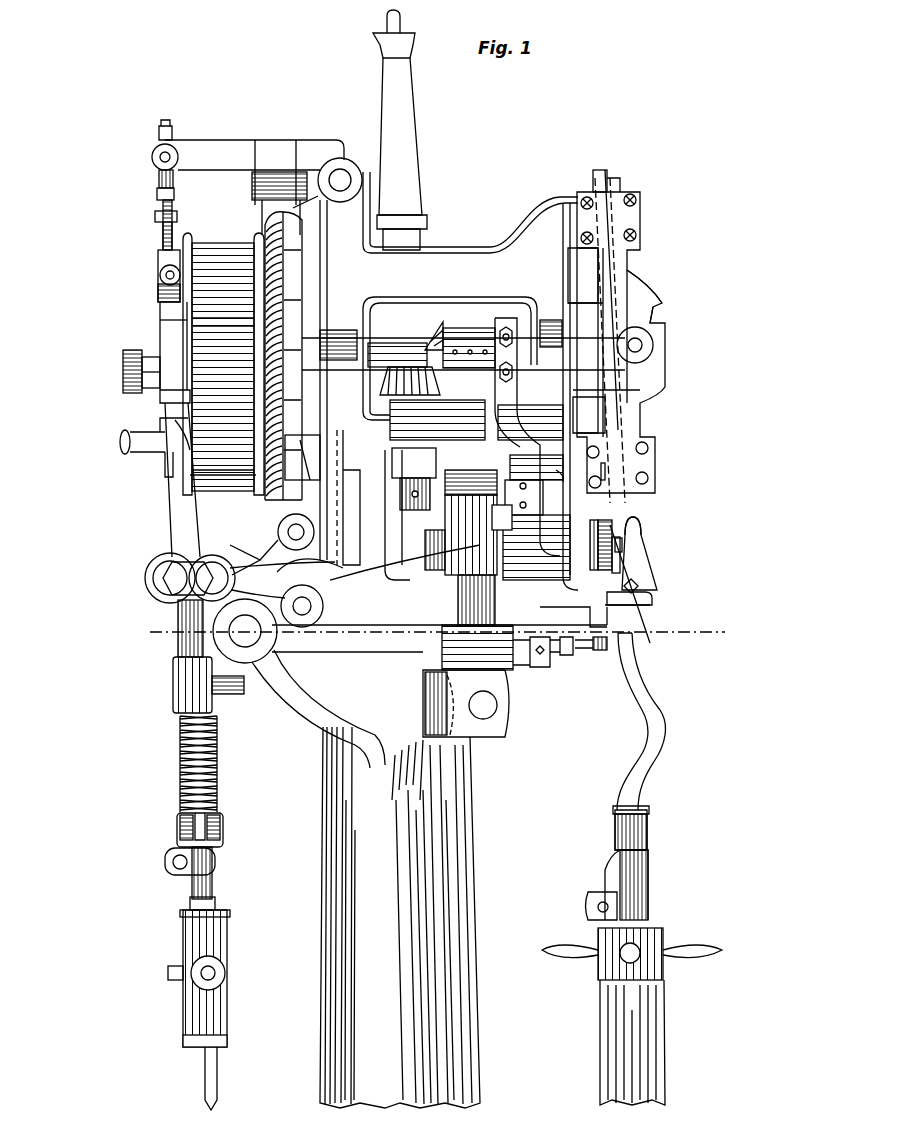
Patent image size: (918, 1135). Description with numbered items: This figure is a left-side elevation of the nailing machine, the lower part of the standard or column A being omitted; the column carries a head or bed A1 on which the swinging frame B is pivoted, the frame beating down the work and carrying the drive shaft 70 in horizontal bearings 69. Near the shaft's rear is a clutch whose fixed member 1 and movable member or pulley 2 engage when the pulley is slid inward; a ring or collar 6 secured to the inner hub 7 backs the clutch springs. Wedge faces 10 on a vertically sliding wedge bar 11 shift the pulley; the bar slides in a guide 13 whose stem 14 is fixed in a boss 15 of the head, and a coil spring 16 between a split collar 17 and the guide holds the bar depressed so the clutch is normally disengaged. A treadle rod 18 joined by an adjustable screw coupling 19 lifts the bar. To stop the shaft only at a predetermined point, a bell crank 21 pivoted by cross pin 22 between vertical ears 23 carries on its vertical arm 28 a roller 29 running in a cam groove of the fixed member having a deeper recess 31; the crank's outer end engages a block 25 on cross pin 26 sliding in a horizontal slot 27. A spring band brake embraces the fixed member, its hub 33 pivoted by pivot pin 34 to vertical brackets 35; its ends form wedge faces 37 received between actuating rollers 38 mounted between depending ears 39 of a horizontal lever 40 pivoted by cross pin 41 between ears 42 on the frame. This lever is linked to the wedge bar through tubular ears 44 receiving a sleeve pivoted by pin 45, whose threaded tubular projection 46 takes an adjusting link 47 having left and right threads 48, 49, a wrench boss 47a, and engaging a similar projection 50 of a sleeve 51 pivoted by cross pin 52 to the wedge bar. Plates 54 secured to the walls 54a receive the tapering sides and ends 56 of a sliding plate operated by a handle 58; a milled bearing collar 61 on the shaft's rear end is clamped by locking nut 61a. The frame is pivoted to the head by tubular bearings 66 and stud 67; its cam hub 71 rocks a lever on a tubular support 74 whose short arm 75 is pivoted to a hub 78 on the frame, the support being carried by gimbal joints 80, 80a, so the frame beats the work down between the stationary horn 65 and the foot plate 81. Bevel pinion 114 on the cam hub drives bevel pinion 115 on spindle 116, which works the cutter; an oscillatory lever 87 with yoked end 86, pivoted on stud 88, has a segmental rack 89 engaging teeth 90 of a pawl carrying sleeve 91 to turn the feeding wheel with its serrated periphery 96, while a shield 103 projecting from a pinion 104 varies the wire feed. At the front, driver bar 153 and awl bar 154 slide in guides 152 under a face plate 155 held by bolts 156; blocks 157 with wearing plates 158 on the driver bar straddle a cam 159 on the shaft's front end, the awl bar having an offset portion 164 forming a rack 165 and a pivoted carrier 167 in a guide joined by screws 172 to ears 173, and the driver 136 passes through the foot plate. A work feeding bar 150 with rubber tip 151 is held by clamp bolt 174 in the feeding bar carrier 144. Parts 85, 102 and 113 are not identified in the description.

The fixed clutch member 1 is at (288, 356).
The movable clutch member or pulley 2 is at (218, 250).
The ring or collar 6 is at (145, 580).
The inner hub 7 is at (436, 630).
The wedge faces 10 is at (166, 460).
The wedge bar 11 is at (172, 555).
The guide 13 is at (173, 686).
The stem 14 is at (178, 652).
The boss 15 is at (238, 695).
The coil spring 16 is at (205, 772).
The split collar 17 is at (224, 833).
The treadle rod 18 is at (204, 1073).
The adjustable screw coupling 19 is at (250, 955).
The bell crank 21 is at (249, 580).
The cross pin 22 is at (324, 604).
The vertical ears 23 is at (285, 582).
The block 25 is at (200, 596).
The cross pin 26 is at (255, 565).
The horizontal slot 27 is at (165, 590).
The vertical arm 28 is at (340, 478).
The roller or stud 29 is at (320, 445).
The recess 31 is at (272, 482).
The hub of brake band 33 is at (283, 522).
The pivot pin 34 is at (288, 530).
The vertical brackets 35 is at (278, 540).
The wedge-shaped faces 37 is at (262, 218).
The actuating rollers 38 is at (305, 210).
The depending ears 39 is at (297, 165).
The horizontal lever 40 is at (254, 155).
The cross pin 41 is at (345, 178).
The vertical ears 42 is at (345, 158).
The tubular bearings or ears 44 is at (152, 157).
The pivot pin 45 is at (168, 150).
The tubular projection 46 is at (158, 179).
The adjusting link 47 is at (172, 212).
The boss 47a is at (147, 213).
The left screw thread 48 is at (157, 196).
The right screw thread 49 is at (163, 242).
The threaded tubular projection 50 is at (158, 258).
The sleeve 51 is at (160, 275).
The cross pin or bolt 52 is at (168, 285).
The plates 54 is at (160, 338).
The walls 54a is at (160, 325).
The tapering sides and ends 56 is at (158, 425).
The operating handle 58 is at (120, 447).
The collar 61 is at (145, 392).
The locking nut 61a is at (123, 365).
The horn 65 is at (640, 775).
The tubular bearings 66 is at (275, 647).
The stud or pin 67 is at (258, 656).
The horizontal bearings 69 is at (336, 330).
The drive shaft 70 is at (380, 345).
The cam hub 71 is at (462, 342).
The vertical tubular support 74 is at (405, 569).
The short arm 75 is at (432, 403).
The hub 78 is at (414, 478).
The pivoted joint 80 is at (512, 737).
The pivoted joint 80a is at (483, 719).
The foot plate 81 is at (655, 605).
The lever 85 is at (505, 320).
The yoked end 86 is at (498, 335).
The oscillatory lever 87 is at (559, 472).
The stud 88 is at (556, 404).
The segmental rack 89 is at (540, 516).
The teeth 90 is at (605, 525).
The pawl carrying sleeve 91 is at (573, 612).
The serrated periphery 96 is at (643, 593).
The pin 102 is at (606, 472).
The semi-cylindrical shield 103 is at (470, 580).
The pinion 104 is at (440, 560).
The post 113 is at (415, 112).
The beveled wheel or pinion 114 is at (436, 330).
The beveled wheel or pinion 115 is at (343, 445).
The spindle 116 is at (398, 530).
The driver 136 is at (624, 560).
The feeding bar carrier 144 is at (541, 670).
The work feeding bar 150 is at (556, 658).
The tip 151 is at (568, 660).
The vertical guides 152 is at (640, 230).
The driver bar 153 is at (600, 172).
The awl bar 154 is at (618, 185).
The face plate 155 is at (625, 278).
The bolts 156 is at (637, 199).
The blocks 157 is at (590, 290).
The wearing plates 158 is at (585, 300).
The cam 159 is at (593, 340).
The intermediate portion 164 is at (666, 333).
The rack 165 is at (656, 312).
The carrier 167 is at (642, 530).
The screws 172 is at (639, 584).
The ears 173 is at (652, 598).
The clamp bolt 174 is at (586, 652).
The standard or column A is at (400, 917).
The head or bed A1 is at (360, 686).
The swinging frame B is at (355, 497).